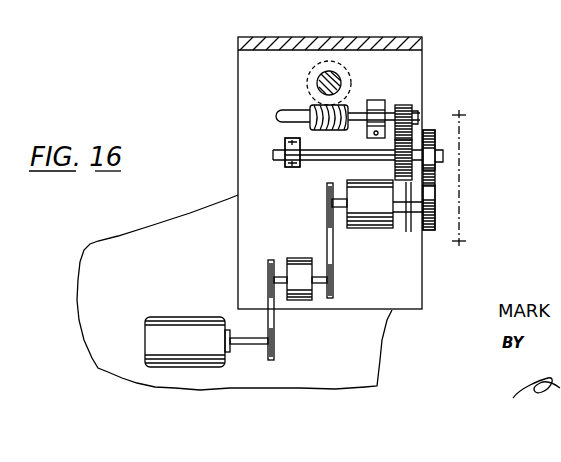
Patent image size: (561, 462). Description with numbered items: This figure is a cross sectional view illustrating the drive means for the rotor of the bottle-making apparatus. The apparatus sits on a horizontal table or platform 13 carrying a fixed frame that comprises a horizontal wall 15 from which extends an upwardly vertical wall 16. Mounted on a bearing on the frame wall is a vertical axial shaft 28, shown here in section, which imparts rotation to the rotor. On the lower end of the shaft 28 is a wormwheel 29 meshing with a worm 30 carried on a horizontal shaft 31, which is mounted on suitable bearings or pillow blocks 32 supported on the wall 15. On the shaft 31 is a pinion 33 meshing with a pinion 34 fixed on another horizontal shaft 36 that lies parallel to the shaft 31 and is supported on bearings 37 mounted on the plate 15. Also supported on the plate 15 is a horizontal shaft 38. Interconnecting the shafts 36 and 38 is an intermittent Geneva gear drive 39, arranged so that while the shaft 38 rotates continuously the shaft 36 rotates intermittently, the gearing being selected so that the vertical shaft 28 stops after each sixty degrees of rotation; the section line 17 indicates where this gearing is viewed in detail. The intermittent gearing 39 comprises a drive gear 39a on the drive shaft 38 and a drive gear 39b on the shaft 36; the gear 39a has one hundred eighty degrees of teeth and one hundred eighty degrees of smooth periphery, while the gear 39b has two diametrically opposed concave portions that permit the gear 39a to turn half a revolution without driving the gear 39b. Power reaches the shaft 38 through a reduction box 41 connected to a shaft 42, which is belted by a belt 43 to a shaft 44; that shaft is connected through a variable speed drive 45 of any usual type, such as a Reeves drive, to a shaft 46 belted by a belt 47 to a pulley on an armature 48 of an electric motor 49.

The horizontal table or platform 13 is at (230, 103).
The horizontal wall 15 is at (412, 58).
The vertical wall 16 is at (404, 44).
The section line 17- 17 is at (462, 122).
The vertical axial shaft 28 is at (320, 80).
The wormwheel 29 is at (348, 72).
The worm 30 is at (312, 125).
The horizontal shaft 31 is at (287, 110).
The pillow blocks 32 is at (374, 106).
The pinion 33 is at (403, 107).
The pinion 34 is at (395, 169).
The horizontal shaft 36 is at (310, 160).
The bearings 37 is at (287, 143).
The horizontal shaft 38 is at (412, 215).
The intermittent Geneva gear drive 39 is at (440, 181).
The drive gear 39a is at (436, 197).
The drive gear 39b is at (436, 172).
The reduction box 41 is at (374, 220).
The shaft 42 is at (337, 213).
The belt 43 is at (333, 252).
The shaft 44 is at (320, 295).
The variable speed drive 45 is at (303, 292).
The shaft 46 is at (282, 263).
The belt 47 is at (268, 300).
The armature 48 is at (240, 338).
The electric motor 49 is at (181, 330).